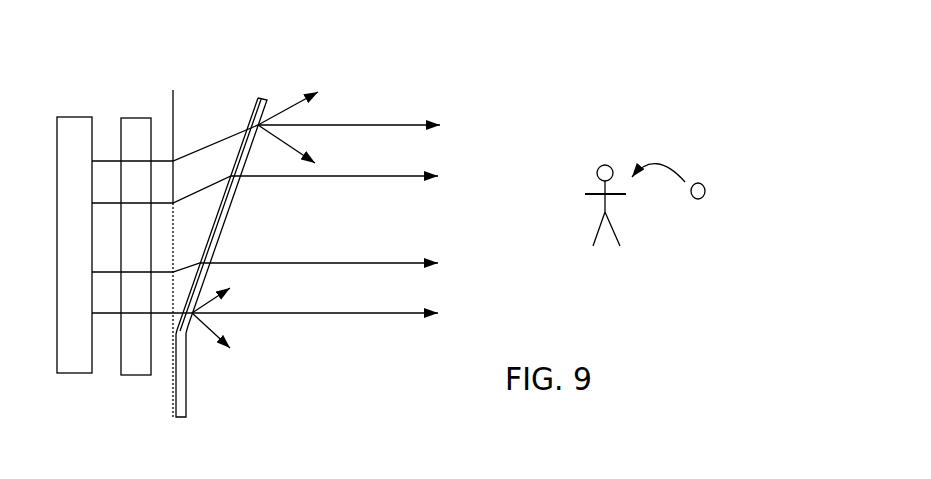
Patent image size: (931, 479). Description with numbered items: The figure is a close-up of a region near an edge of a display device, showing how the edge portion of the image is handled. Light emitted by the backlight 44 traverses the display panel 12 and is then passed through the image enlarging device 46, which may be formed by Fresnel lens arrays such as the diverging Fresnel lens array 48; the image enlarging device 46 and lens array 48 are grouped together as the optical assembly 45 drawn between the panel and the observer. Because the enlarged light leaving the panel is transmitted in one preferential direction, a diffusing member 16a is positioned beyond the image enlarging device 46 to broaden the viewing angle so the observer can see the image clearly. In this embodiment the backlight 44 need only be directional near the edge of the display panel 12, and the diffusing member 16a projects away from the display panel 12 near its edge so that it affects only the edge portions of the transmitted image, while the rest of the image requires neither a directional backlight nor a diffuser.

The display panel 12 is at (121, 122).
The diffusing member 16a is at (186, 399).
The backlight 44 is at (57, 352).
The optical assembly 45 is at (258, 53).
The image enlarging device 46 is at (172, 99).
The diverging Fresnel lens array 48 is at (256, 103).